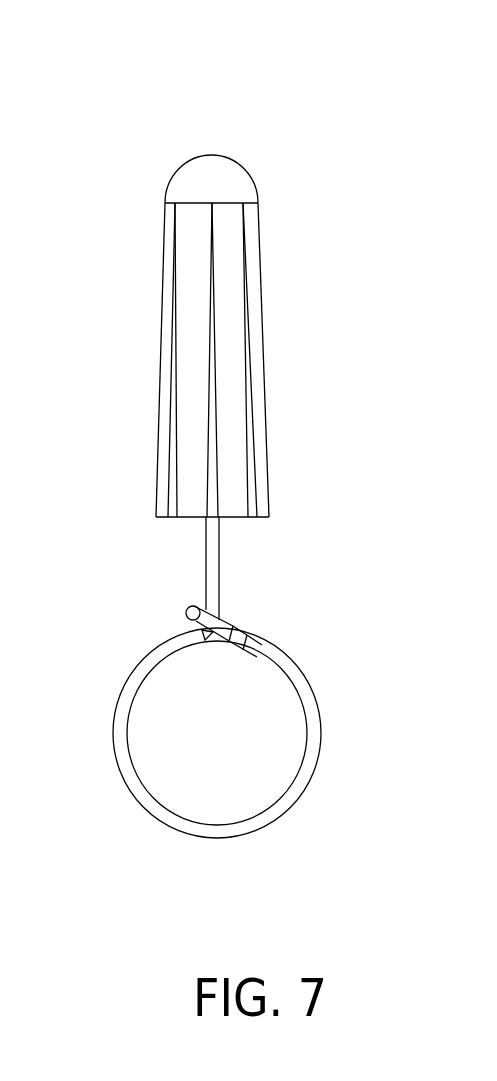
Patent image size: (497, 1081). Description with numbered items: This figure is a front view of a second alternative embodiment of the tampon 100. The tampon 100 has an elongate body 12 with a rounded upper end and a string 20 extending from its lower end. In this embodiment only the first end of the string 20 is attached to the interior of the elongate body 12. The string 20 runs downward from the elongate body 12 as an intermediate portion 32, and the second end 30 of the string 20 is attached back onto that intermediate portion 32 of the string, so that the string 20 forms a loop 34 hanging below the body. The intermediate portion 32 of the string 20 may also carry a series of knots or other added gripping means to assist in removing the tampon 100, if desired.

The tampon 100 is at (258, 95).
The elongate body 12 is at (225, 340).
The intermediate portion 32 is at (213, 557).
The second end 30 is at (190, 617).
The string 20 is at (133, 768).
The loop 34 is at (340, 722).